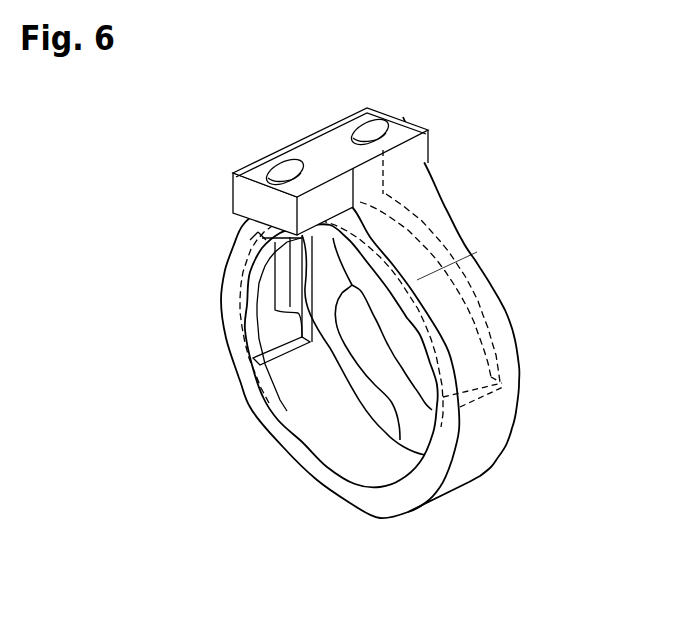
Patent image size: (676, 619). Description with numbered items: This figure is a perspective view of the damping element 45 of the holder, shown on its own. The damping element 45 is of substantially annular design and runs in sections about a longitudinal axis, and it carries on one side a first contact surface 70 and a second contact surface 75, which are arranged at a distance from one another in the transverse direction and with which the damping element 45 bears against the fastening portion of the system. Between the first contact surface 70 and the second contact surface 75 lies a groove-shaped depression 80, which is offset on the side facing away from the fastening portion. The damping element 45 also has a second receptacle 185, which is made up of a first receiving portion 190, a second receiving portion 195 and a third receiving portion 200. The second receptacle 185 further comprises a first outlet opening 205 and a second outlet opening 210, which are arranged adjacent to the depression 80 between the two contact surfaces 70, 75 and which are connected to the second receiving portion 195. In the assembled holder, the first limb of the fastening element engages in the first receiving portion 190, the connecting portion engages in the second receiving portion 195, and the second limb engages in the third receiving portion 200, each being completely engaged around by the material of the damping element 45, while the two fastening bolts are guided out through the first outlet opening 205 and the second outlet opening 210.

The damping element 45 is at (496, 496).
The first contact surface 70 is at (311, 140).
The second contact surface 75 is at (398, 135).
The depression 80 is at (330, 150).
The second receptacle 185 is at (493, 318).
The first receiving portion 190 is at (310, 337).
The second receiving portion 195 is at (341, 385).
The third receiving portion 200 is at (400, 440).
The first outlet opening 205 is at (283, 177).
The second outlet opening 210 is at (372, 133).